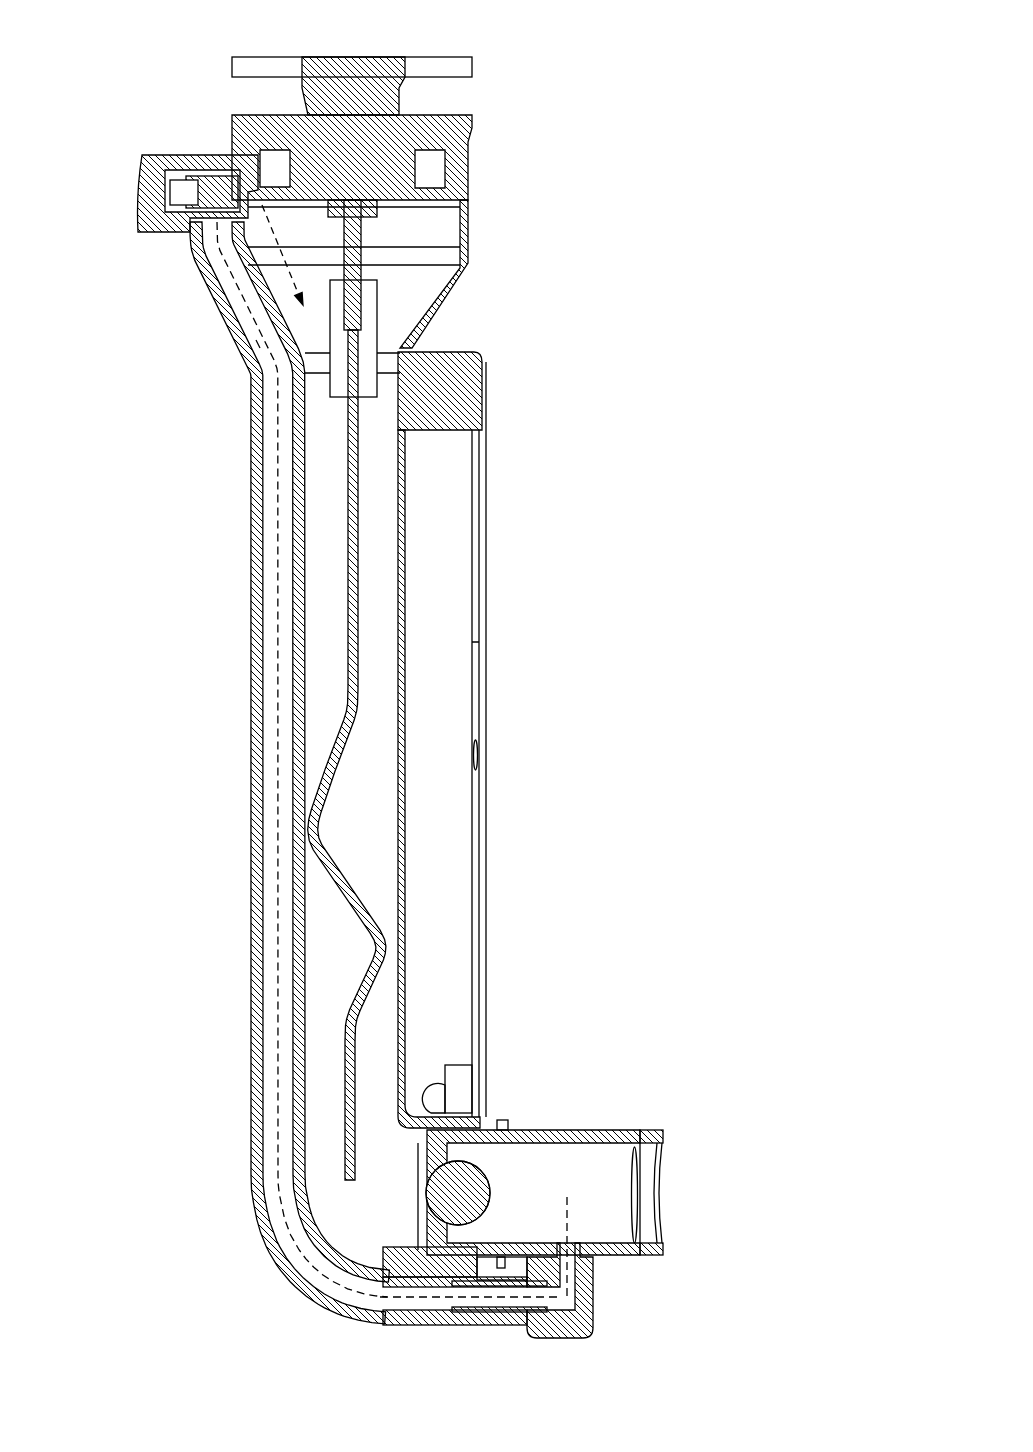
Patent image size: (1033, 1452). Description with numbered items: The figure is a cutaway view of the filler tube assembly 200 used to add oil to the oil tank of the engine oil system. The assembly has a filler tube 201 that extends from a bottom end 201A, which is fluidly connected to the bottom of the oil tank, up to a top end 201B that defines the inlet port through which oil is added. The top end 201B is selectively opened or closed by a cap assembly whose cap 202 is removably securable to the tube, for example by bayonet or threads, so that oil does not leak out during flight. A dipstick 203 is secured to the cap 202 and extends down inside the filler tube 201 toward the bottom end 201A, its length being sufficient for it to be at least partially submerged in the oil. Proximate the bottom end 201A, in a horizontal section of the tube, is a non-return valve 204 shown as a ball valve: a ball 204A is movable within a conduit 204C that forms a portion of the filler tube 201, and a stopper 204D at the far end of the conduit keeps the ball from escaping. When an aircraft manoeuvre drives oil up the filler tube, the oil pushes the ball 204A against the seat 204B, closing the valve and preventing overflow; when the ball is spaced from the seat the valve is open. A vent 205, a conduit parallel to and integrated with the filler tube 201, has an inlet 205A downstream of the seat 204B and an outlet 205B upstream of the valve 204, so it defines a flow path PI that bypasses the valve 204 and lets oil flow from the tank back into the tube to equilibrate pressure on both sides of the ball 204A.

The filler tube assembly 200 is at (648, 177).
The filler tube 201 is at (405, 797).
The bottom end 201A is at (662, 1177).
The top end 201B is at (478, 128).
The cap 202 is at (352, 68).
The dipstick 203 is at (358, 578).
The valve 204 is at (558, 1108).
The ball 204A is at (450, 1190).
The seat 204B is at (395, 1262).
The conduit 204C is at (615, 1262).
The stopper 204D is at (634, 1148).
The vent 205 is at (268, 778).
The inlet 205A is at (562, 1290).
The outlet 205B is at (240, 166).
The flow path PI is at (258, 343).